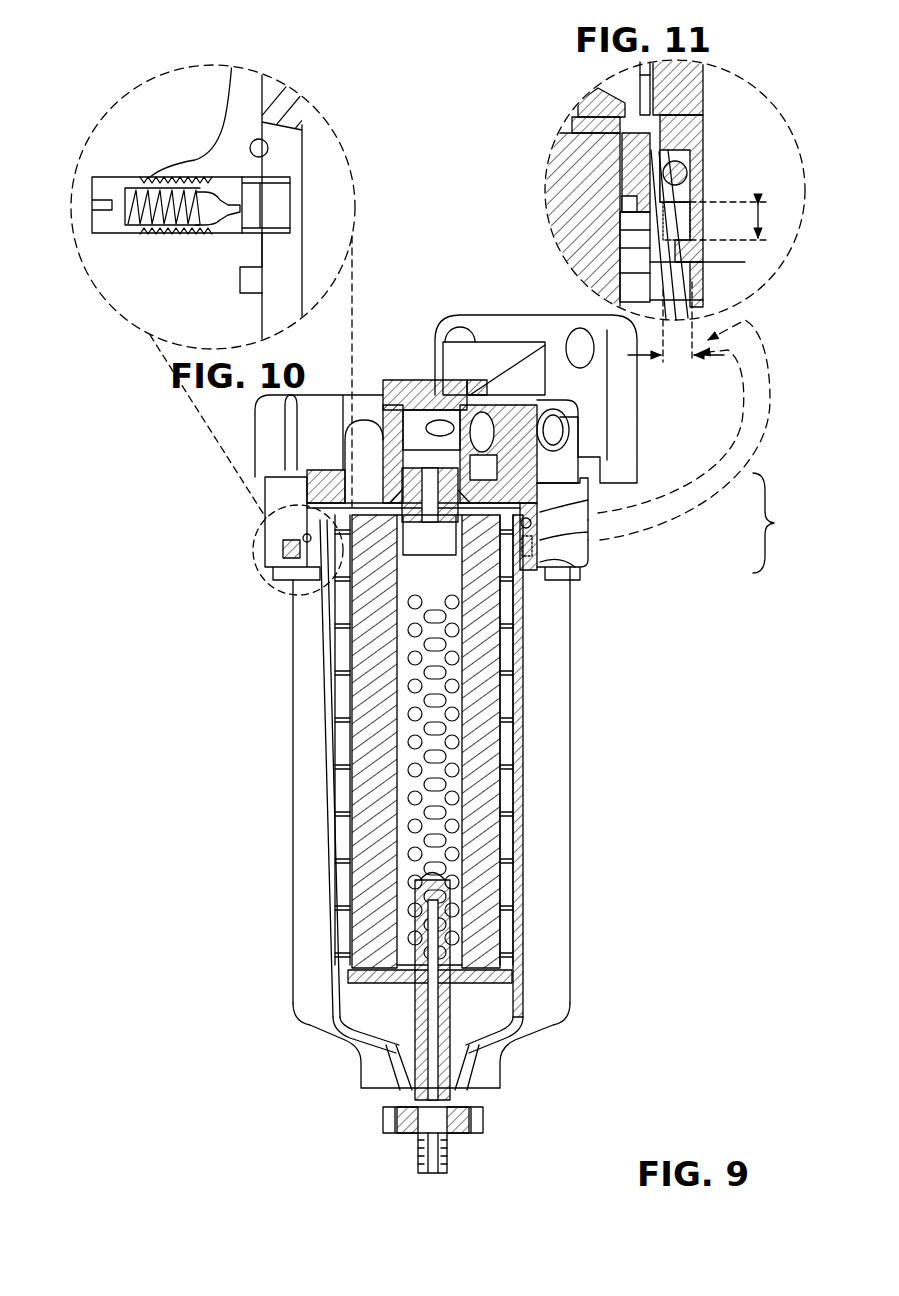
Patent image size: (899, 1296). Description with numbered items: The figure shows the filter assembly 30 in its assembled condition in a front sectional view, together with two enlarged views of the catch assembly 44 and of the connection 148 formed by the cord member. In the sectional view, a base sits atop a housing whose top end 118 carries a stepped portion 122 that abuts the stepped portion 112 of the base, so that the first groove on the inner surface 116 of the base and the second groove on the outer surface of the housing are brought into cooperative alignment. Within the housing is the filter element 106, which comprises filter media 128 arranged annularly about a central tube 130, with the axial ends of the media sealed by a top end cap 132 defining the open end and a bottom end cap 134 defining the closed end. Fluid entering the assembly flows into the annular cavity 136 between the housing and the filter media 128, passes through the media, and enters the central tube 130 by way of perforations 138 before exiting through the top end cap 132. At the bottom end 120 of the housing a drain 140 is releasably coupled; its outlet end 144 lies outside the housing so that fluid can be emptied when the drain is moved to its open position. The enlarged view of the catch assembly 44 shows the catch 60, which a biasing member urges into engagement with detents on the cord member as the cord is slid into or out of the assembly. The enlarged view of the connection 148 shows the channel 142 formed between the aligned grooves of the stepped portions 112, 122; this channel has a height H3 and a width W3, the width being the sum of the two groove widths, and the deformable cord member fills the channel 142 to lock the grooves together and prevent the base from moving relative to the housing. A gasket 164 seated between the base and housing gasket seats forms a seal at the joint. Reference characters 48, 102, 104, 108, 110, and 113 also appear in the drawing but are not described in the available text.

In FIG. 9, the filter assembly 30 is at (463, 122).
In FIG. 10, the catch assembly 44 is at (173, 106).
In FIG. 10, the valve body 48 is at (97, 177).
In FIG. 10, the catch 60 is at (233, 222).
In FIG. 9, the filter head 102 is at (392, 376).
In FIG. 9, the outer bowl 104 is at (574, 929).
In FIG. 9, the filter element 106 is at (530, 772).
In FIG. 9, the mounting bracket 108 is at (642, 415).
In FIG. 9, the central passage 110 is at (412, 420).
In FIG. 9, the stepped portion 112 is at (570, 510).
In FIG. 11, the head flange 113 is at (704, 120).
In FIG. 9, the inner surface 116 is at (548, 437).
In FIG. 9, the top end 118 is at (272, 594).
In FIG. 9, the bottom end 120 is at (291, 1034).
In FIG. 9, the stepped portion 122 is at (572, 565).
In FIG. 11, the stepped portion 122 is at (735, 262).
In FIG. 9, the filter media 128 is at (516, 685).
In FIG. 9, the central tube 130 is at (406, 735).
In FIG. 9, the top end cap 132 is at (586, 483).
In FIG. 9, the bottom end cap 134 is at (518, 983).
In FIG. 9, the annular cavity 136 is at (348, 880).
In FIG. 9, the perforations 138 is at (408, 657).
In FIG. 9, the drain 140 is at (448, 1095).
In FIG. 9, the channel 142 is at (552, 548).
In FIG. 10, the channel 142 is at (262, 230).
In FIG. 11, the channel 142 is at (702, 187).
In FIG. 9, the outlet end 144 is at (440, 1170).
In FIG. 9, the connection 148 is at (705, 446).
In FIG. 11, the connection 148 is at (816, 214).
In FIG. 11, the gasket 164 is at (702, 158).
In FIG. 11, the height of the channel H3 is at (725, 221).
In FIG. 11, the width of the channel W3 is at (676, 322).